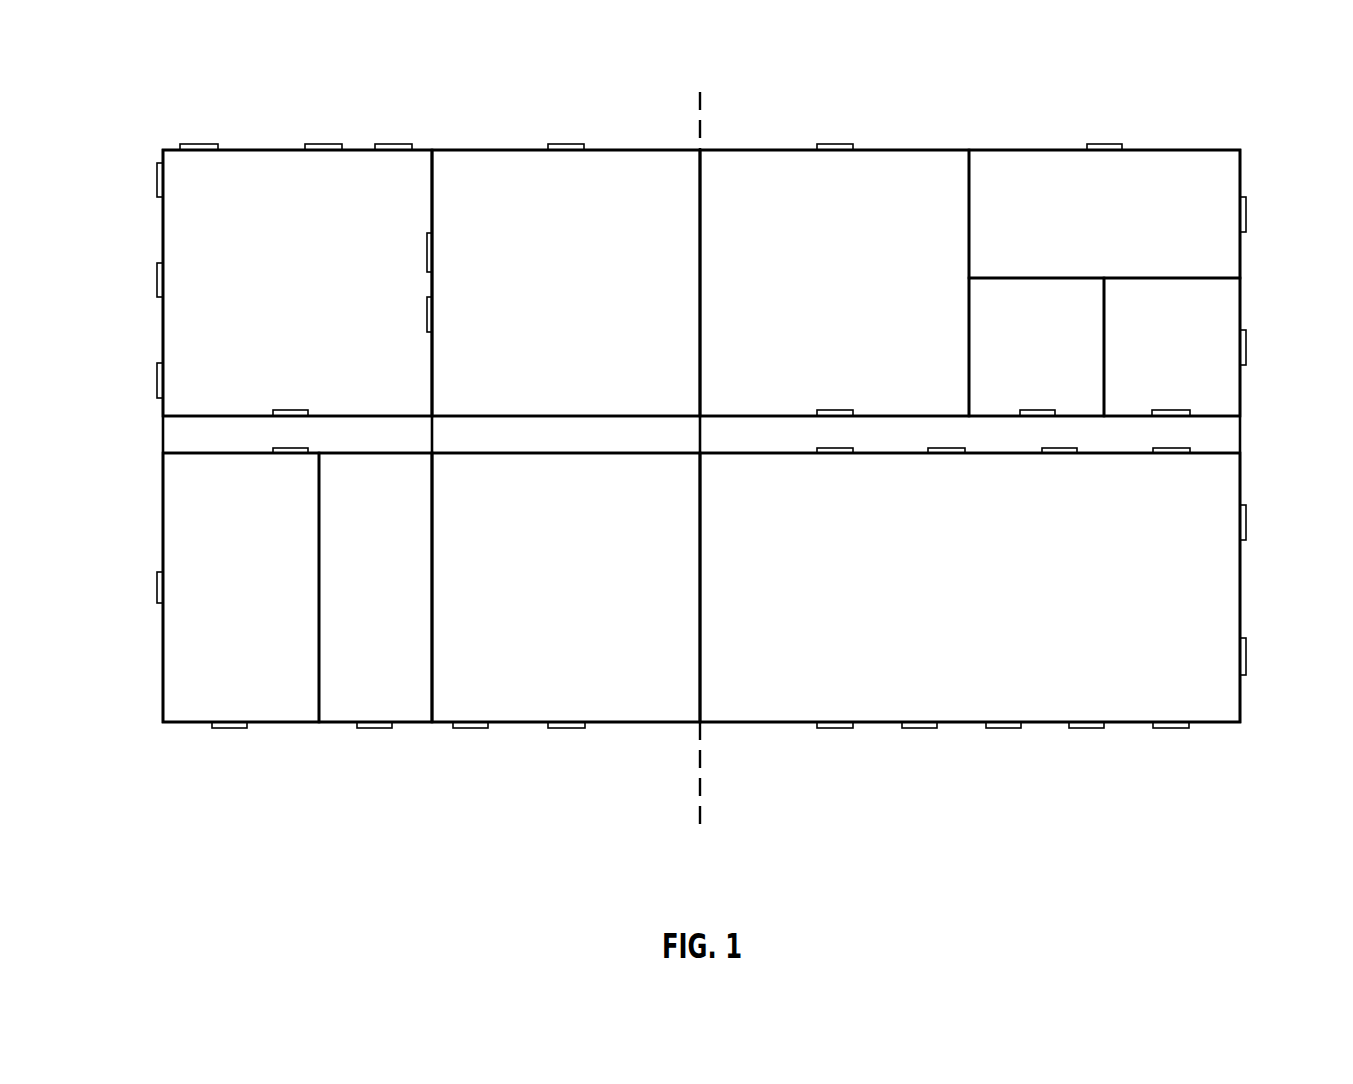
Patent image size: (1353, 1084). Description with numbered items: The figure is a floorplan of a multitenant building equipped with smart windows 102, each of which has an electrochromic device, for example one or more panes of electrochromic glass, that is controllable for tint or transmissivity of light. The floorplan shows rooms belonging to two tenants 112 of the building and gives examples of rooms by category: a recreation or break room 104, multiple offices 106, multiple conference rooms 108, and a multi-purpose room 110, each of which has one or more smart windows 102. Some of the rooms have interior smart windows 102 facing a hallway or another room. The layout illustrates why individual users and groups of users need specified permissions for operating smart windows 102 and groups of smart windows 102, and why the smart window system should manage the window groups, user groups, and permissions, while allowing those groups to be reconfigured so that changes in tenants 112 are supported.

The smart window 102 is at (702, 444).
The recreation or break room 104 is at (275, 330).
The office 106 is at (1194, 365).
The conference room 108 is at (985, 617).
The multi-purpose room 110 is at (1083, 244).
The tenant 112 is at (335, 893).